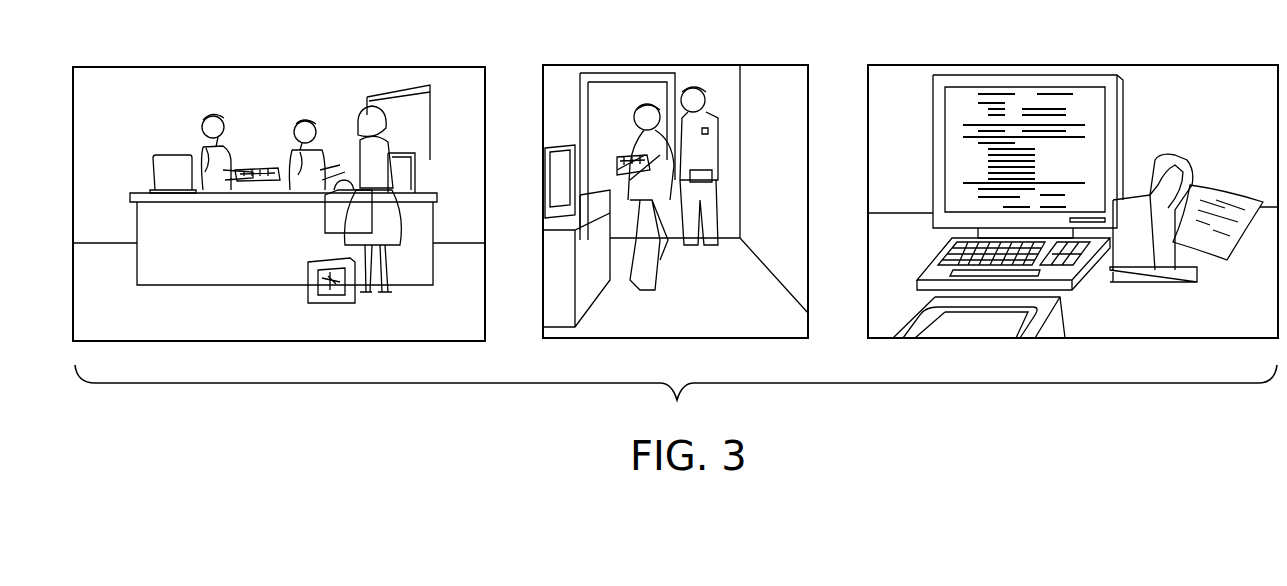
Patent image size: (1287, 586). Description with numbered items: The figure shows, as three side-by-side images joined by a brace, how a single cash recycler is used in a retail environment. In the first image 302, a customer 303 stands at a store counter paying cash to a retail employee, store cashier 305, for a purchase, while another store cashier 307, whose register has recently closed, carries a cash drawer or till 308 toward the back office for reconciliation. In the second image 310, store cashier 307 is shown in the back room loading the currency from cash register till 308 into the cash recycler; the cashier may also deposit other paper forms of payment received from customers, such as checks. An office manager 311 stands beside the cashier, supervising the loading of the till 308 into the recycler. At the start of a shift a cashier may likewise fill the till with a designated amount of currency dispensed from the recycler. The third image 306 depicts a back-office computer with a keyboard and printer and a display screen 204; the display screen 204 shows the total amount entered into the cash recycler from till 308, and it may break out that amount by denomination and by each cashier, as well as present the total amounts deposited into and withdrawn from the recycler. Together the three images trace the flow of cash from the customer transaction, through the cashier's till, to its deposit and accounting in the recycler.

The image 302 is at (108, 88).
The customer 303 is at (387, 223).
The store cashier 305 is at (300, 115).
The store cashier 307 is at (208, 115).
The cash register till 308 is at (271, 185).
The image 310 is at (765, 85).
The office manager 311 is at (710, 175).
The image 306 is at (1210, 78).
The computer display 204 is at (967, 100).